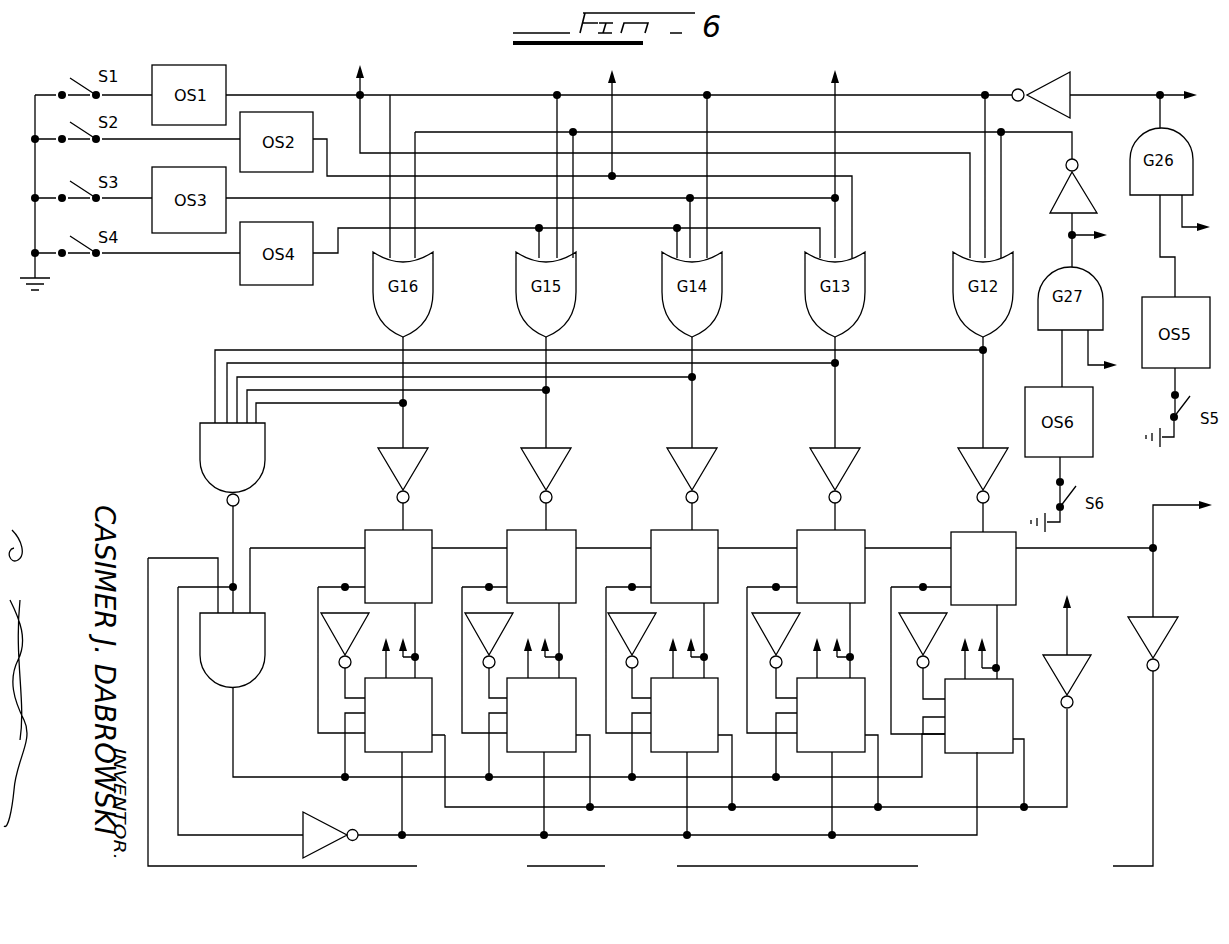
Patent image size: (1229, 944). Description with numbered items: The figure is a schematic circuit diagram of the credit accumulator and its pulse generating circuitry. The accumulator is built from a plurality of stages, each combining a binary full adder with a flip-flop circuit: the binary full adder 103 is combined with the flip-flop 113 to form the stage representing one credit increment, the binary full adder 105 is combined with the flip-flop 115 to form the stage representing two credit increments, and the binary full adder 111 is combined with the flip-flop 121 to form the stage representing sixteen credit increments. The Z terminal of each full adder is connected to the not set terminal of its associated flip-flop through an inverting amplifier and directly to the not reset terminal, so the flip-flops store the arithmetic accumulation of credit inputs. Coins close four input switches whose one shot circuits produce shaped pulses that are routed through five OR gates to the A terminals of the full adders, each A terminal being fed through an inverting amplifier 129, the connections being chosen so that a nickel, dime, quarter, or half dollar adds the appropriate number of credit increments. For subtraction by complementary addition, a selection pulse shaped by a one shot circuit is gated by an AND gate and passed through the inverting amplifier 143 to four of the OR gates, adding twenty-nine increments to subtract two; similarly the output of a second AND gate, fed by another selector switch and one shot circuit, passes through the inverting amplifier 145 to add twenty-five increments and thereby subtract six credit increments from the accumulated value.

The inverting amplifier 143 is at (1070, 80).
The inverting amplifier 145 is at (1058, 190).
The inverting amplifier 129 is at (380, 468).
The binary full adder 111 is at (432, 535).
The binary full adder 105 is at (797, 535).
The binary full adder 103 is at (951, 540).
The flip-flop 121 is at (365, 745).
The flip-flop 115 is at (845, 752).
The flip-flop 113 is at (1013, 733).